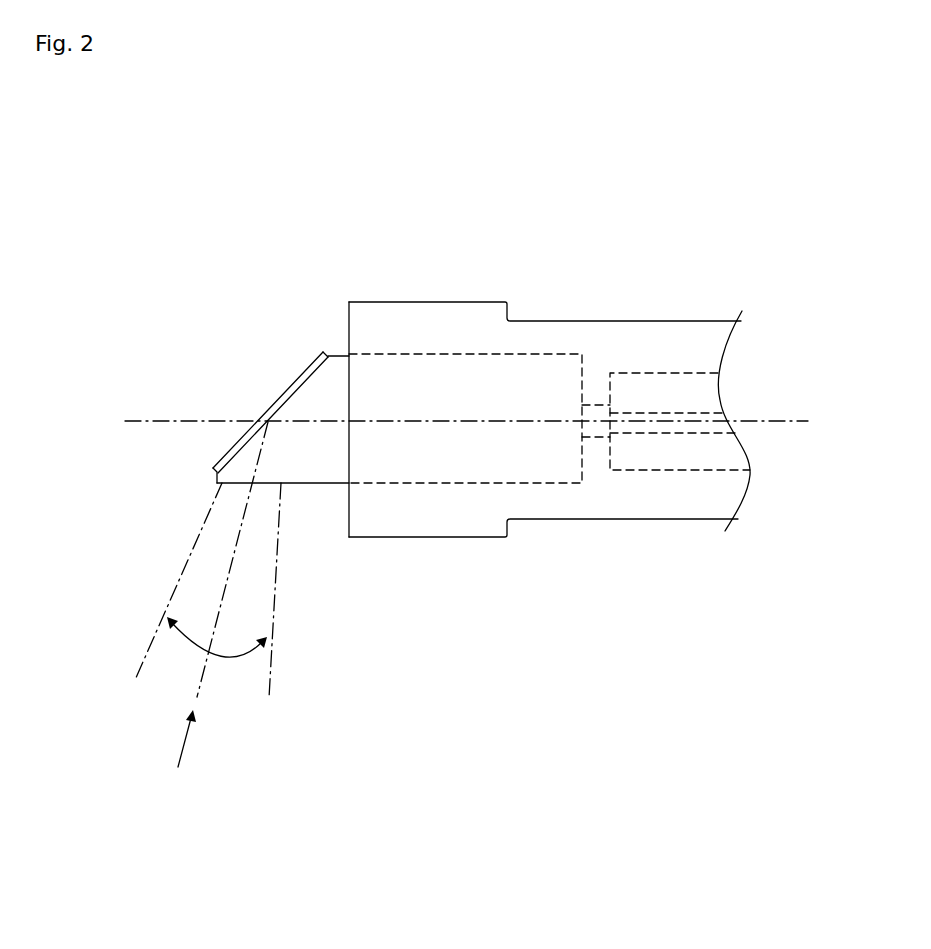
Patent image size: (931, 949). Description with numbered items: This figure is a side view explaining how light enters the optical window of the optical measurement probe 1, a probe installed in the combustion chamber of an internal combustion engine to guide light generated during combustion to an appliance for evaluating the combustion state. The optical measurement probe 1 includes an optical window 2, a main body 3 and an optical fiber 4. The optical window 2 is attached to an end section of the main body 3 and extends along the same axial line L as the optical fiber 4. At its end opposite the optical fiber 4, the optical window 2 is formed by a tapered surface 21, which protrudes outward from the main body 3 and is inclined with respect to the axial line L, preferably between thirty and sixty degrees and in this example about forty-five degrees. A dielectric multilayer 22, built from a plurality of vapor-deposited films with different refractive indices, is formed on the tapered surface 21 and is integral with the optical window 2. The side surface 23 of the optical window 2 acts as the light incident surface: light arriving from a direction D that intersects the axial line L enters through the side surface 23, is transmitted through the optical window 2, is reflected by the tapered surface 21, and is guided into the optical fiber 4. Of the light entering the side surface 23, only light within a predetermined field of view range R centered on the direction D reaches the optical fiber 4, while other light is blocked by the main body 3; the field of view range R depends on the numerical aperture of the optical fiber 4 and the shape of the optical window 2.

The optical measurement probe 1 is at (599, 221).
The optical window 2 is at (336, 347).
The main body 3 is at (457, 301).
The optical fiber 4 is at (672, 440).
The tapered surface 21 is at (293, 383).
The dielectric multilayer 22 is at (230, 450).
The side surface 23 is at (300, 485).
The axial line L is at (787, 421).
The direction D is at (178, 750).
The field of view range R is at (227, 652).